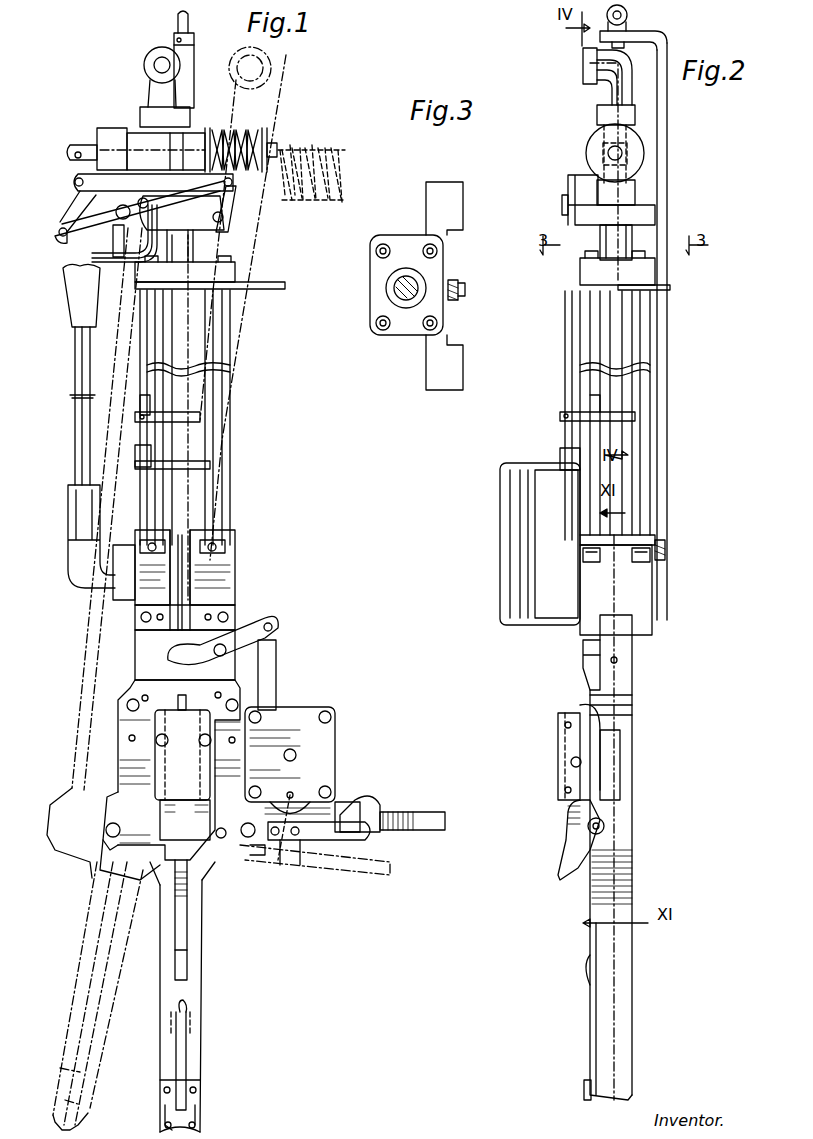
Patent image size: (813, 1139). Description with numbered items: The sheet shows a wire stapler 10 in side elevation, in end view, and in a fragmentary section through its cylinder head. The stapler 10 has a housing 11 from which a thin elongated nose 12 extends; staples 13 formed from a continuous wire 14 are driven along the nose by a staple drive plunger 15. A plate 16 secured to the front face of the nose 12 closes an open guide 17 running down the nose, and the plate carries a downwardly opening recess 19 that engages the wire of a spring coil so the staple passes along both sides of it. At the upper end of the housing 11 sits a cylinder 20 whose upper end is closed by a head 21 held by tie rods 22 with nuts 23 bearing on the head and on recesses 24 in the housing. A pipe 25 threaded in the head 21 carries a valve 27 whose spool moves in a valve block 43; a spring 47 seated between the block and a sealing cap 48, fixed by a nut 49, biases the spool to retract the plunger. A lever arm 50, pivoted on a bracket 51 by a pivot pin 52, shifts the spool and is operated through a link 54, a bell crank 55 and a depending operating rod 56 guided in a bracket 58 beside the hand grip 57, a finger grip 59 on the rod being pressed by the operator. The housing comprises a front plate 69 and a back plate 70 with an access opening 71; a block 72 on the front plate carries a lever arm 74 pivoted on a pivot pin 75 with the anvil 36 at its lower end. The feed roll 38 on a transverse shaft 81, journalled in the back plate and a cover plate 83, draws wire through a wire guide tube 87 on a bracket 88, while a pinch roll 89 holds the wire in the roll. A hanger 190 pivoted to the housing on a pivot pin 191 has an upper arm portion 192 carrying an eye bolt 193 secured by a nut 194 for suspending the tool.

In FIG. 1, the stapler 10 is at (232, 498).
In FIG. 2, the stapler 10 is at (498, 595).
In FIG. 1, the housing 11 is at (240, 590).
In FIG. 2, the housing 11 is at (635, 685).
In FIG. 1, the nose 12 is at (203, 948).
In FIG. 2, the nose 12 is at (628, 1010).
In FIG. 1, the staple 13 is at (185, 1005).
In FIG. 1, the wire 14 is at (365, 800).
In FIG. 1, the staple drive plunger 15 is at (183, 968).
In FIG. 2, the staple drive plunger 15 is at (585, 968).
In FIG. 1, the plate 16 is at (187, 1105).
In FIG. 2, the plate 16 is at (584, 1088).
In FIG. 1, the guide 17 is at (183, 1060).
In FIG. 1, the recess 19 is at (190, 1138).
In FIG. 1, the cylinder 20 is at (205, 445).
In FIG. 2, the cylinder 20 is at (625, 396).
In FIG. 1, the head 21 is at (240, 275).
In FIG. 3, the head 21 is at (402, 245).
In FIG. 2, the head 21 is at (640, 272).
In FIG. 1, the tie rods 22 is at (226, 360).
In FIG. 3, the tie rods 22 is at (435, 245).
In FIG. 2, the tie rods 22 is at (590, 350).
In FIG. 1, the nuts 23 is at (236, 262).
In FIG. 2, the nuts 23 is at (592, 265).
In FIG. 1, the recesses 24 is at (230, 565).
In FIG. 2, the recesses 24 is at (585, 560).
In FIG. 2, the pipe 25 is at (622, 250).
In FIG. 1, the valve 27 is at (108, 126).
In FIG. 2, the valve 27 is at (590, 156).
In FIG. 2, the anvil 36 is at (603, 820).
In FIG. 1, the feed roll 38 is at (300, 790).
In FIG. 1, the valve block 43 is at (140, 130).
In FIG. 1, the spring 47 is at (210, 128).
In FIG. 1, the sealing cap 48 is at (270, 130).
In FIG. 2, the sealing cap 48 is at (600, 135).
In FIG. 1, the nut 49 is at (270, 150).
In FIG. 1, the lever arm 50 is at (70, 205).
In FIG. 1, the bracket 51 is at (90, 225).
In FIG. 1, the pivot pin 52 is at (80, 230).
In FIG. 1, the link 54 is at (98, 195).
In FIG. 1, the bell crank 55 is at (235, 205).
In FIG. 1, the operating rod 56 is at (140, 432).
In FIG. 2, the operating rod 56 is at (568, 300).
In FIG. 1, the hand grip 57 is at (185, 598).
In FIG. 2, the hand grip 57 is at (508, 522).
In FIG. 1, the bracket 58 is at (138, 470).
In FIG. 2, the bracket 58 is at (562, 460).
In FIG. 1, the finger grip 59 is at (165, 410).
In FIG. 2, the finger grip 59 is at (598, 412).
In FIG. 3, the front plate 69 is at (432, 360).
In FIG. 2, the front plate 69 is at (595, 860).
In FIG. 2, the back plate 70 is at (620, 832).
In FIG. 1, the opening 71 is at (165, 865).
In FIG. 1, the block 72 is at (165, 775).
In FIG. 2, the block 72 is at (565, 782).
In FIG. 2, the lever arm 74 is at (570, 822).
In FIG. 2, the pivot pin 75 is at (573, 758).
In FIG. 1, the transverse shaft 81 is at (293, 792).
In FIG. 1, the cover plate 83 is at (305, 712).
In FIG. 1, the wire guide tube 87 is at (435, 815).
In FIG. 1, the bracket 88 is at (370, 800).
In FIG. 1, the pinch roll 89 is at (283, 860).
In FIG. 3, the hanger 190 is at (455, 278).
In FIG. 2, the hanger 190 is at (668, 155).
In FIG. 3, the pivot pin 191 is at (466, 290).
In FIG. 2, the pivot pin 191 is at (660, 540).
In FIG. 2, the upper arm portion 192 is at (645, 32).
In FIG. 2, the eye bolt 193 is at (640, 48).
In FIG. 2, the nut 194 is at (640, 55).